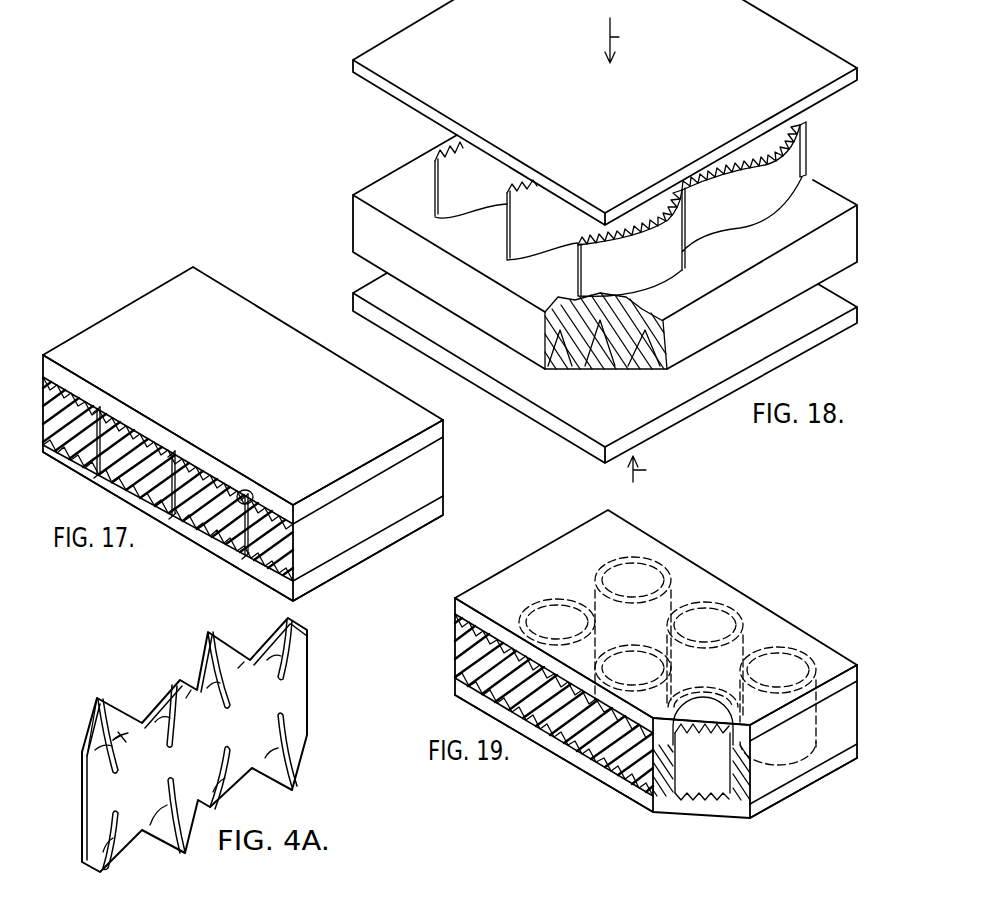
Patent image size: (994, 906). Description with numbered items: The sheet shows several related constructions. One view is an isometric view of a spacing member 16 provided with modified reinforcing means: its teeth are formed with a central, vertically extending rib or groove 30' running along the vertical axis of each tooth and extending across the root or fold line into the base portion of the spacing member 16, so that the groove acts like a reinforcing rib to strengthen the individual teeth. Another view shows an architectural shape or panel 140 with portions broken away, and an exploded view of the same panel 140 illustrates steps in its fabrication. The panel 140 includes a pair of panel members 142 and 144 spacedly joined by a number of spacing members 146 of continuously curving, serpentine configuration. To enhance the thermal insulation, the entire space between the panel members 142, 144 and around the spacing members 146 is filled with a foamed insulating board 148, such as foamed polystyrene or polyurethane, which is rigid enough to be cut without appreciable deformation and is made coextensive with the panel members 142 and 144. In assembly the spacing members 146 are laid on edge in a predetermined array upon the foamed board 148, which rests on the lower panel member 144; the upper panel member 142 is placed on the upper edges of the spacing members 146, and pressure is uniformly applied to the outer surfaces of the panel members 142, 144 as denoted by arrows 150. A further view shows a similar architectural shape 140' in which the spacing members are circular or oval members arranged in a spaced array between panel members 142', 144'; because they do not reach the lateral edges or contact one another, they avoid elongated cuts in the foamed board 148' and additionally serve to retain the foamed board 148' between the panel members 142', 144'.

In FIG. 18, the architectural shape or panel 140 is at (587, 252).
In FIG. 17, the architectural shape or panel 140 is at (243, 434).
In FIG. 18, the upper panel member 142 is at (605, 112).
In FIG. 17, the upper panel member 142 is at (269, 439).
In FIG. 18, the lower panel member 144 is at (586, 368).
In FIG. 17, the lower panel member 144 is at (268, 523).
In FIG. 18, the spacing member 146 is at (540, 243).
In FIG. 17, the spacing member 146 is at (247, 490).
In FIG. 18, the foamed insulating board 148 is at (621, 342).
In FIG. 17, the foamed insulating board 148 is at (211, 479).
In FIG. 18, the arrows 150 is at (642, 250).
In FIG. 19, the architectural shape 140' is at (656, 664).
In FIG. 19, the panel member 142' is at (669, 669).
In FIG. 19, the panel member 144' is at (656, 748).
In FIG. 19, the foamed board 148' is at (629, 728).
In FIG. 4A, the spacing member 16 is at (73, 801).
In FIG. 4A, the central vertically extending rib or groove 30' is at (123, 734).